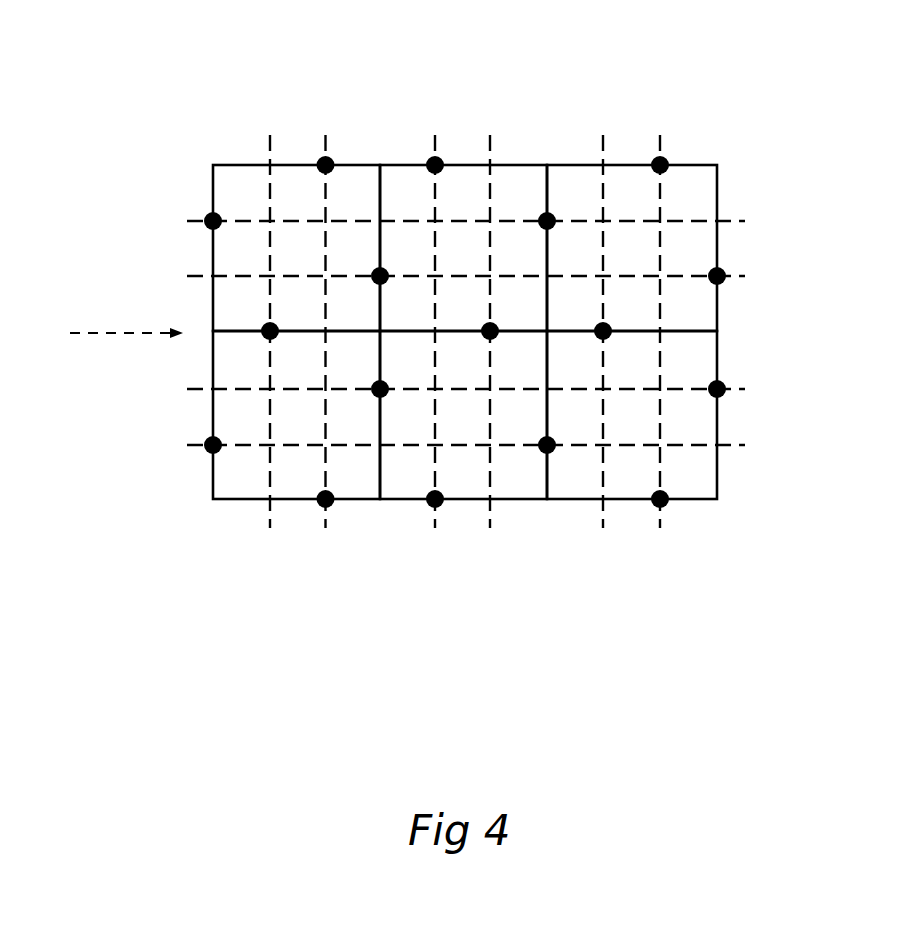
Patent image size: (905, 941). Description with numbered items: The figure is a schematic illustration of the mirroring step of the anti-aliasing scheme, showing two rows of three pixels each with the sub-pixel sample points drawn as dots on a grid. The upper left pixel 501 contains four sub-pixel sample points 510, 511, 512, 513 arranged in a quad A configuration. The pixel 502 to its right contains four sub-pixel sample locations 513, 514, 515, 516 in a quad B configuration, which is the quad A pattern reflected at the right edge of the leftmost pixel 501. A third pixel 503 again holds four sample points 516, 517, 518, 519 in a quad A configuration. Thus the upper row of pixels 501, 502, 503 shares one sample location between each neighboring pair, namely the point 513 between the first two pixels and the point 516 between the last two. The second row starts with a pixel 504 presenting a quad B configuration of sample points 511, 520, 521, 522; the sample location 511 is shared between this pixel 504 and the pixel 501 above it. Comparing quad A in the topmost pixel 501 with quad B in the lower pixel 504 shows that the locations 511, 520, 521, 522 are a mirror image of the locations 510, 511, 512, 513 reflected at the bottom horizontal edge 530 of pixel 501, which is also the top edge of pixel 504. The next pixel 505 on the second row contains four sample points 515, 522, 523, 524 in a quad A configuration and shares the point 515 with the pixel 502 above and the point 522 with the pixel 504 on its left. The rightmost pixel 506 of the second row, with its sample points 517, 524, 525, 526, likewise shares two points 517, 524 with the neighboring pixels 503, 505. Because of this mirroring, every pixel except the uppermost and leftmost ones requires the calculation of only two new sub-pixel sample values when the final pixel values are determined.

The upper left pixel 501 is at (317, 51).
The pixel 502 is at (480, 51).
The third pixel 503 is at (649, 51).
The pixel 504 is at (317, 610).
The pixel 505 is at (480, 610).
The rightmost pixel 506 is at (649, 610).
The sub-pixel sample point 510 is at (213, 220).
The sub-pixel sample point 511 is at (270, 331).
The sub-pixel sample point 512 is at (326, 165).
The sub-pixel sample point 513 is at (380, 276).
The sub-pixel sample point 514 is at (436, 165).
The sub-pixel sample point 515 is at (491, 330).
The sub-pixel sample point 516 is at (548, 221).
The sub-pixel sample point 517 is at (604, 331).
The sub-pixel sample point 518 is at (661, 165).
The sub-pixel sample point 519 is at (718, 276).
The sub-pixel sample point 520 is at (213, 445).
The sub-pixel sample point 521 is at (325, 499).
The sub-pixel sample point 522 is at (380, 389).
The sub-pixel sample point 523 is at (436, 499).
The sub-pixel sample point 524 is at (547, 450).
The sub-pixel sample point 525 is at (661, 499).
The sub-pixel sample point 526 is at (718, 388).
The bottom horizontal edge 530 is at (103, 338).